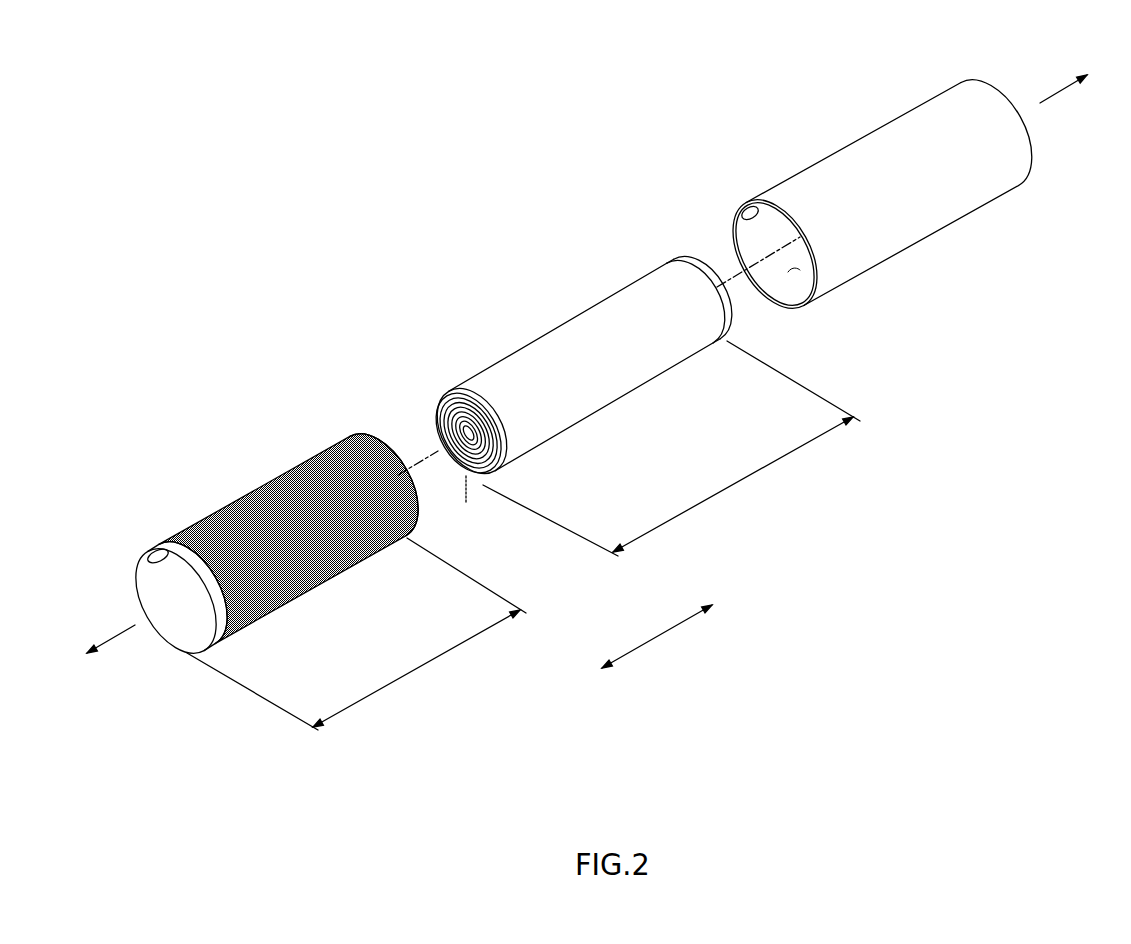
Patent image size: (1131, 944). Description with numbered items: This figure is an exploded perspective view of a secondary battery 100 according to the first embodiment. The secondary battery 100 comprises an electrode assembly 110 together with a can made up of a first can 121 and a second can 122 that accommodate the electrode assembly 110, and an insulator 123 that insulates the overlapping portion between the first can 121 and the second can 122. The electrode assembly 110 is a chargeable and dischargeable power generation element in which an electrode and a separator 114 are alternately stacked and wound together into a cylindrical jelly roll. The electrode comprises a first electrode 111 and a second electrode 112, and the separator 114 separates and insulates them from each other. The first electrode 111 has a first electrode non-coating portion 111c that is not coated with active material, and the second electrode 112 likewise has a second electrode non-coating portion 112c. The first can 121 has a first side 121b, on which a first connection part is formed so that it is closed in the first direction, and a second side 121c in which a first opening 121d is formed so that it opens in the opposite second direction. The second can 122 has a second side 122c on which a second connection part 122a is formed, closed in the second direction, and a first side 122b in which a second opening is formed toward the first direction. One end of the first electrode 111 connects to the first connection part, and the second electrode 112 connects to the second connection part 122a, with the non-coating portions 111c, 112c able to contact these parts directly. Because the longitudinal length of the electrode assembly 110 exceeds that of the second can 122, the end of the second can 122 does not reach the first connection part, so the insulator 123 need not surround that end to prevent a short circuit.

The secondary battery 100 is at (193, 110).
The electrode assembly 110 is at (508, 314).
The first electrode 111 is at (737, 331).
The first electrode non-coating portion 111c is at (723, 345).
The second electrode 112 is at (482, 487).
The second electrode non-coating portion 112c is at (437, 398).
The separator 114 is at (563, 413).
The first can 121 is at (836, 130).
The first side of the first can 121b is at (989, 83).
The second side of the first can 121c is at (749, 207).
The first opening 121d is at (803, 268).
The second can 122 is at (191, 664).
The second connection part 122a is at (172, 625).
The first side of the second can 122b is at (382, 438).
The second side of the second can 122c is at (152, 551).
The insulator 123 is at (317, 563).